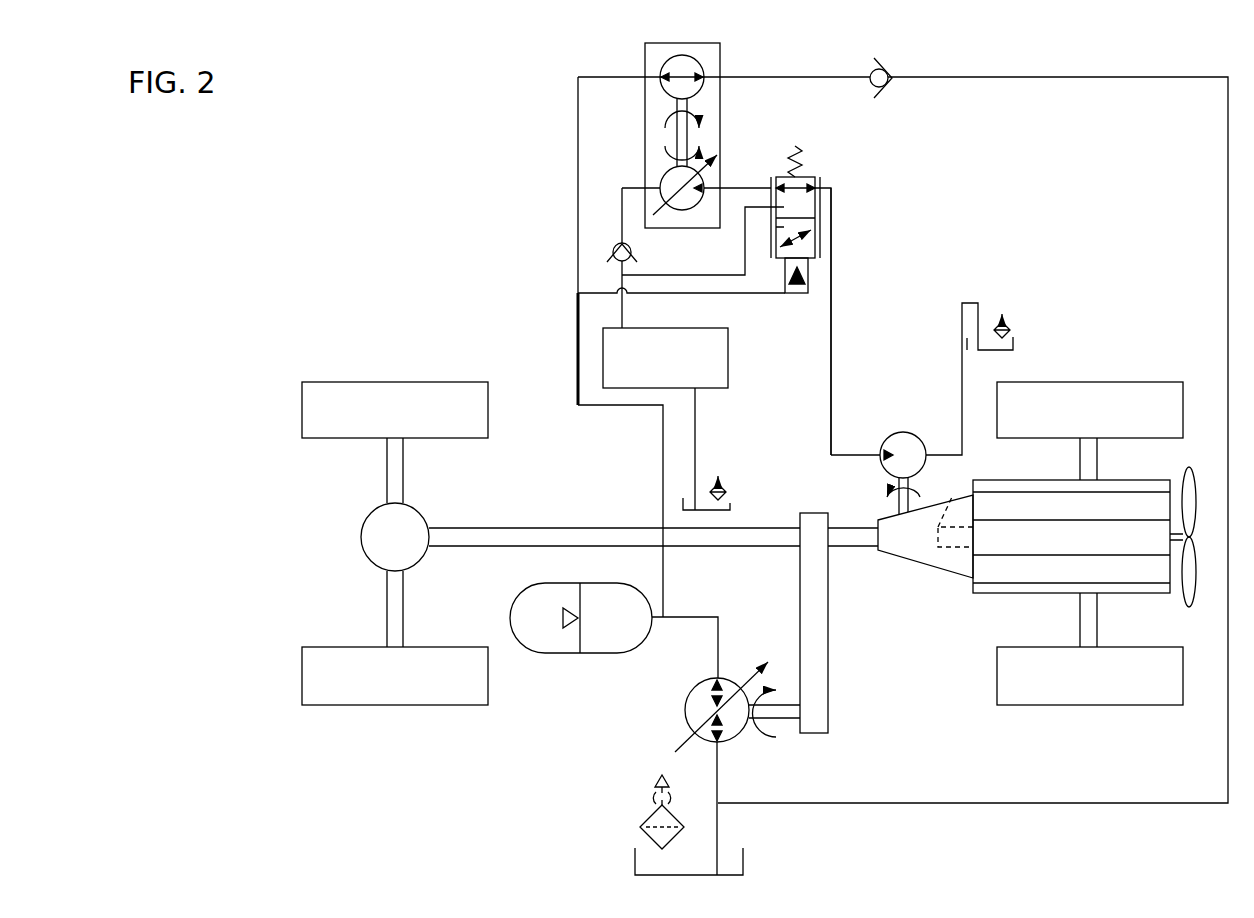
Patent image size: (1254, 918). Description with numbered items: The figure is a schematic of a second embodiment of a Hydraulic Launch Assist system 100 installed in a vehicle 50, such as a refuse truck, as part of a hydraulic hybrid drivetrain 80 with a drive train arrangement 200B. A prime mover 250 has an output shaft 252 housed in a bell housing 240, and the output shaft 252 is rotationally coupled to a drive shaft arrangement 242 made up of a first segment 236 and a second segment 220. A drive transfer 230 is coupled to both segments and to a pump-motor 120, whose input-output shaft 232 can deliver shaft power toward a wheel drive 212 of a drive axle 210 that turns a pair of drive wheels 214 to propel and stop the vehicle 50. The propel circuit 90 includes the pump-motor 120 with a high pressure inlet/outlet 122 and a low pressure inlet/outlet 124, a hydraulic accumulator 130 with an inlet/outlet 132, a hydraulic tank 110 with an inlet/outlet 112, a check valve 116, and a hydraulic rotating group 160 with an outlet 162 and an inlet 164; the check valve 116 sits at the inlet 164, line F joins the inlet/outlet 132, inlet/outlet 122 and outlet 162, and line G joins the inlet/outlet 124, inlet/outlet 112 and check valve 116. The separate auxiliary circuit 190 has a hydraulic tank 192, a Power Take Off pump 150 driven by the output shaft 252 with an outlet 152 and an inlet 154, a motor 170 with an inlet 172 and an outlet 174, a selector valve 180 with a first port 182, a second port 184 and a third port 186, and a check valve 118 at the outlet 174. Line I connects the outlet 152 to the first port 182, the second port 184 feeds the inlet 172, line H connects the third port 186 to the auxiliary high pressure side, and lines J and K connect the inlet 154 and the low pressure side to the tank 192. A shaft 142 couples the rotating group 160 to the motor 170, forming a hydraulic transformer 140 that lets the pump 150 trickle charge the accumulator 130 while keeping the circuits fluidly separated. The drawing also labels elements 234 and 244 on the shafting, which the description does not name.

The vehicle 50 is at (258, 480).
The hydraulic hybrid drivetrain 80 is at (527, 740).
The propel circuit 90 is at (670, 616).
The Hydraulic Launch Assist system 100 is at (495, 152).
The hydraulic tank 110 is at (635, 862).
The inlet/outlet 112 is at (717, 853).
The check valve 116 is at (890, 83).
The check valve 118 is at (613, 245).
The pump-motor 120 is at (686, 708).
The high pressure inlet/outlet 122 is at (718, 662).
The low pressure inlet/outlet 124 is at (717, 747).
The hydraulic accumulator 130 is at (535, 612).
The inlet/outlet 132 is at (653, 618).
The hydraulic transformer 140 is at (723, 65).
The shaft 142 is at (688, 135).
The Power Take Off hydraulic pump 150 is at (895, 427).
The outlet 152 is at (867, 455).
The inlet 154 is at (938, 455).
The hydraulic rotating group 160 is at (660, 90).
The outlet 162 is at (623, 77).
The inlet 164 is at (723, 77).
The motor 170 is at (660, 172).
The inlet 172 is at (733, 187).
The outlet 174 is at (620, 200).
The selector valve 180 is at (813, 173).
The first port 182 is at (827, 185).
The second port 184 is at (760, 187).
The third port 186 is at (765, 210).
The auxiliary circuit 190 is at (727, 362).
The hydraulic tank 192 is at (730, 502).
The drive train arrangement 200B is at (373, 212).
The drive axle 210 is at (383, 485).
The wheel drive 212 is at (438, 537).
The drive wheels 214 is at (420, 395).
The second segment 220 is at (558, 531).
The drive transfer 230 is at (818, 695).
The input-output shaft 232 is at (793, 718).
The transmission input shaft 234 is at (790, 535).
The first segment 236 is at (832, 537).
The housing 240 is at (950, 567).
The drive shaft arrangement 242 is at (878, 530).
The charge pump drive shaft 244 is at (898, 515).
The prime mover 250 is at (988, 593).
The output shaft 252 is at (952, 497).